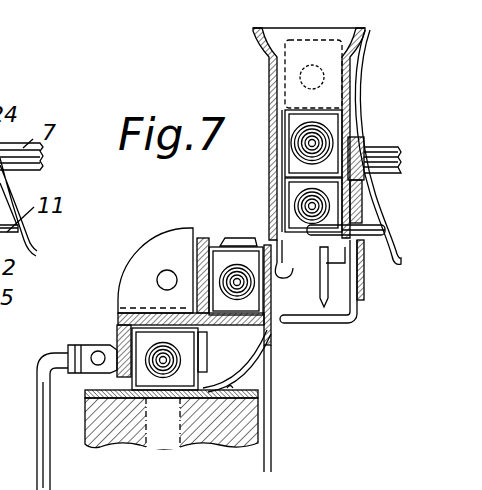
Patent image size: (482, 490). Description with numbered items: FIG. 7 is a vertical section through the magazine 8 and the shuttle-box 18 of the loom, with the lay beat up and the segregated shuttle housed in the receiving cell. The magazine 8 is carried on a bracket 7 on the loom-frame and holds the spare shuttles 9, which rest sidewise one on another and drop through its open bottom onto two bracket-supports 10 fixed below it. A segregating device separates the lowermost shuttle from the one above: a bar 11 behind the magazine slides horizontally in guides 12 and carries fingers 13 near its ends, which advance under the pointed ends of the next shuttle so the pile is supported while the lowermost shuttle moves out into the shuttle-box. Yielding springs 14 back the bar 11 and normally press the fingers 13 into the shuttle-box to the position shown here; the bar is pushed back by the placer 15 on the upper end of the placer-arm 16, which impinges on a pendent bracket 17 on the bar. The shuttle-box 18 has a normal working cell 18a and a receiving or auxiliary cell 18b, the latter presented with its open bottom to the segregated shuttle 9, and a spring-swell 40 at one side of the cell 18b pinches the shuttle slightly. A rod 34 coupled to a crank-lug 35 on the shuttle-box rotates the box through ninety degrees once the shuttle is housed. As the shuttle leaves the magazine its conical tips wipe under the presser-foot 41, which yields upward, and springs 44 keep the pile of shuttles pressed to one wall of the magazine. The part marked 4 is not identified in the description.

The base support 4 is at (210, 448).
The bracket 7 is at (409, 152).
The magazine 8 is at (267, 45).
The spare shuttles 9 is at (237, 250).
The bracket-supports 10 is at (320, 325).
The bar 11 is at (384, 233).
The guides 12 is at (377, 254).
The fingers 13 is at (347, 217).
The yielding springs 14 is at (370, 113).
The placer 15 is at (272, 296).
The placer-arm 16 is at (272, 405).
The pendent bracket 17 is at (327, 278).
The shuttle-box 18 is at (190, 302).
The normal working cell 18a is at (208, 353).
The receiving cell 18b is at (210, 243).
The rod 34 is at (42, 443).
The crank-lug 35 is at (92, 348).
The spring-swell 40 is at (256, 233).
The foot 41 is at (293, 267).
The springs 44 is at (281, 200).